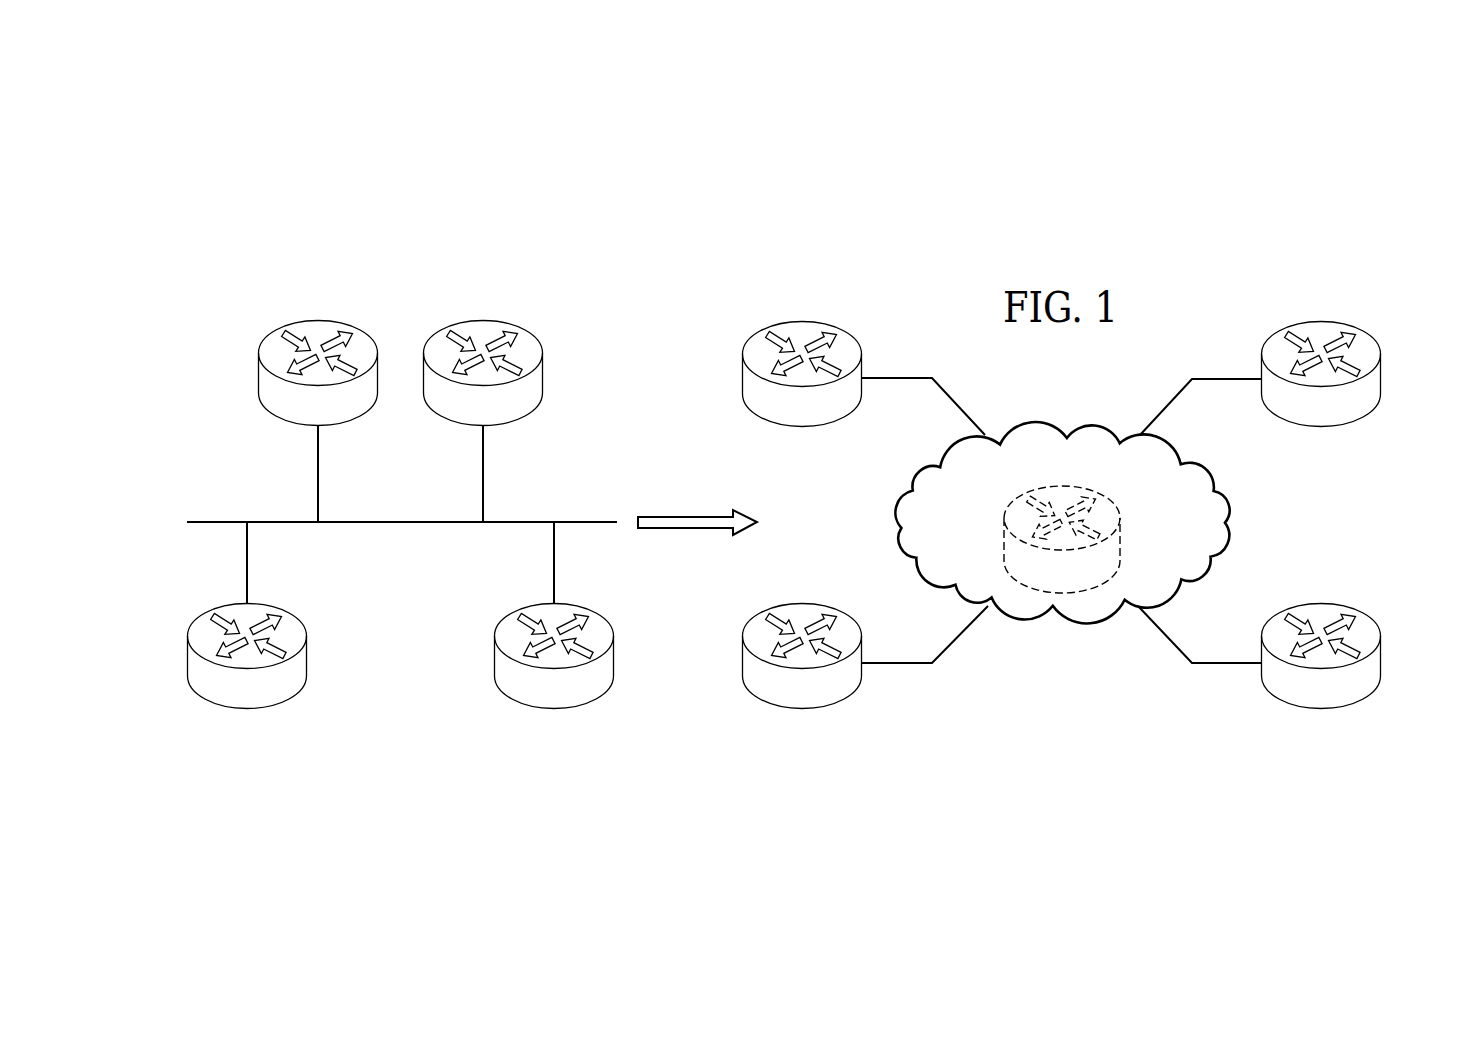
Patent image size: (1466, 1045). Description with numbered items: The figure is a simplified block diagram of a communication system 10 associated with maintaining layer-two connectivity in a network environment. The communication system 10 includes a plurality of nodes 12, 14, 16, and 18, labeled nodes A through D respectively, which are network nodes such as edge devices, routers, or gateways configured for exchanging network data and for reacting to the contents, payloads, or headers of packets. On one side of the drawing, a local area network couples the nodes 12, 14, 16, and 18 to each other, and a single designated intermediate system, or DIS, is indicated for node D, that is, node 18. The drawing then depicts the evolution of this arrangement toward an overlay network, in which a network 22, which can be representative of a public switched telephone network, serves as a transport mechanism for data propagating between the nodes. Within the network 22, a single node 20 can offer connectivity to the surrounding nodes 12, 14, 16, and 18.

The communication system 10 is at (642, 269).
The node 12 is at (258, 380).
The node 14 is at (188, 662).
The node 16 is at (497, 662).
The node 18 is at (543, 380).
The single node 20 is at (1120, 537).
The network 22 is at (1245, 522).